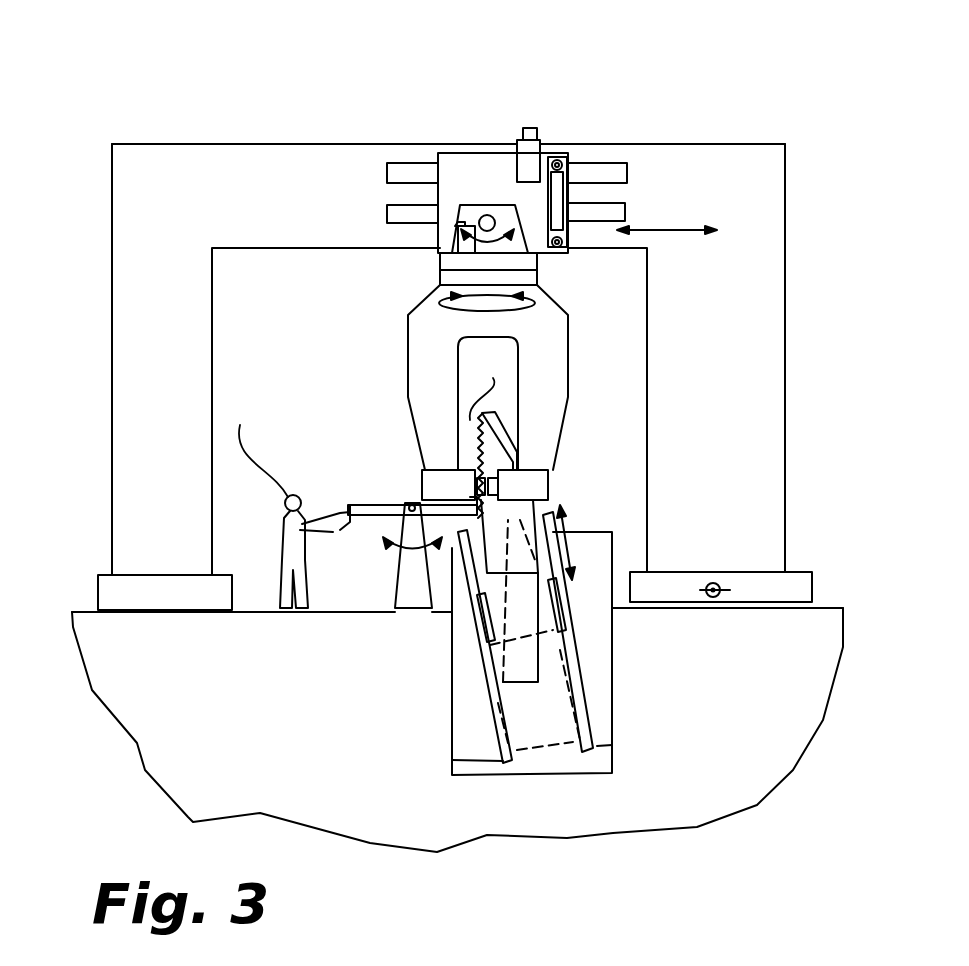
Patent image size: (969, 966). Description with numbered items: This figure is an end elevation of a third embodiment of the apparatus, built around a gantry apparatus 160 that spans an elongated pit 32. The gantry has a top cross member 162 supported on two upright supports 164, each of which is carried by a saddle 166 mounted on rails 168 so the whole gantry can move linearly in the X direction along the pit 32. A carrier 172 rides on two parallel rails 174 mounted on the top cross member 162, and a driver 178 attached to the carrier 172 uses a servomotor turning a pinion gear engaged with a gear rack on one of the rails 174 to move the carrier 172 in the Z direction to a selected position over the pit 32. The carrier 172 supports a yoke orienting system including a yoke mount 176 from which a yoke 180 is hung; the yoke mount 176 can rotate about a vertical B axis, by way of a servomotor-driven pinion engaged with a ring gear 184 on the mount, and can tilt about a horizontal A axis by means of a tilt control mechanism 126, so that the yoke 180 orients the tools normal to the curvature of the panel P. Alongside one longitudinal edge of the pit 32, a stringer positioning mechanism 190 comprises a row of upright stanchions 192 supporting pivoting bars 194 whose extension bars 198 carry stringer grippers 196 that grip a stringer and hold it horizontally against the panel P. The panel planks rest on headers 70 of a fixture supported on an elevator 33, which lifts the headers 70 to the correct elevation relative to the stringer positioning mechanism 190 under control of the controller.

The gantry apparatus 160 is at (451, 290).
The top cross member 162 is at (313, 170).
The upright supports 164 is at (127, 350).
The saddle 166 is at (106, 577).
The rails 168 is at (123, 613).
The carrier 172 is at (492, 168).
The parallel rails 174 is at (387, 212).
The driver 178 is at (605, 189).
The tilt control mechanism 126 is at (581, 190).
The yoke mount 176 is at (427, 290).
The ring gear 184 is at (434, 272).
The yoke 180 is at (430, 401).
The stringer positioning mechanism 190 is at (386, 472).
The upright stanchions 192 is at (395, 600).
The bars 194 is at (352, 510).
The stringer grippers 196 is at (343, 533).
The extension bars 198 is at (282, 525).
The headers 70 is at (513, 403).
The elongated pit 32 is at (592, 472).
The elevator 33 is at (468, 702).